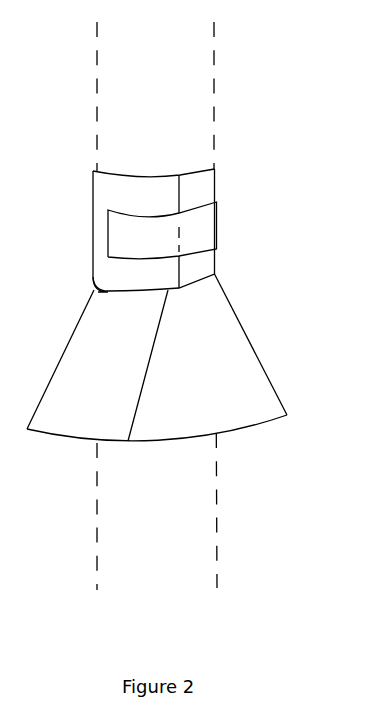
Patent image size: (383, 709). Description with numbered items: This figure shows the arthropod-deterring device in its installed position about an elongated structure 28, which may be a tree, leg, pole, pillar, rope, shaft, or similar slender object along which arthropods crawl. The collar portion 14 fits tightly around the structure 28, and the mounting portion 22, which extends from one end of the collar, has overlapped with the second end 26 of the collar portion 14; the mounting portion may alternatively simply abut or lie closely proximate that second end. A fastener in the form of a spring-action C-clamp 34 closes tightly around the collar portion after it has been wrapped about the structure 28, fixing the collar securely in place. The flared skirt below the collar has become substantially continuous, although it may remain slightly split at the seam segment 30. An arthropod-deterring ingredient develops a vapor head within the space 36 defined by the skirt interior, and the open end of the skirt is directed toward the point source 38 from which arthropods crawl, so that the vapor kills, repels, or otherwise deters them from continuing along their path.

The collar portion 14 is at (100, 193).
The mounting portion 22 is at (167, 203).
The second end 26 is at (214, 273).
The elongated structure 28 is at (185, 128).
The seam segment 30 is at (145, 382).
The C-clamp 34 is at (213, 225).
The space 36 is at (248, 438).
The point source 38 is at (208, 582).